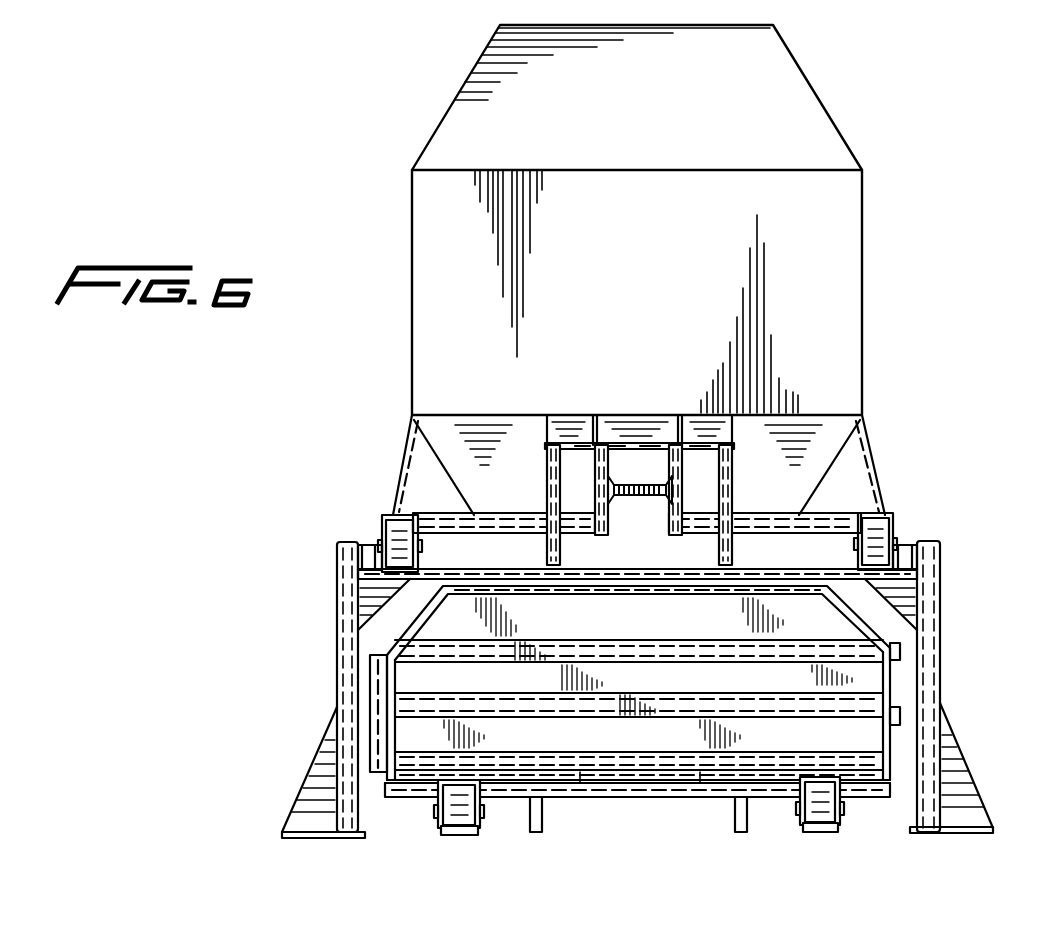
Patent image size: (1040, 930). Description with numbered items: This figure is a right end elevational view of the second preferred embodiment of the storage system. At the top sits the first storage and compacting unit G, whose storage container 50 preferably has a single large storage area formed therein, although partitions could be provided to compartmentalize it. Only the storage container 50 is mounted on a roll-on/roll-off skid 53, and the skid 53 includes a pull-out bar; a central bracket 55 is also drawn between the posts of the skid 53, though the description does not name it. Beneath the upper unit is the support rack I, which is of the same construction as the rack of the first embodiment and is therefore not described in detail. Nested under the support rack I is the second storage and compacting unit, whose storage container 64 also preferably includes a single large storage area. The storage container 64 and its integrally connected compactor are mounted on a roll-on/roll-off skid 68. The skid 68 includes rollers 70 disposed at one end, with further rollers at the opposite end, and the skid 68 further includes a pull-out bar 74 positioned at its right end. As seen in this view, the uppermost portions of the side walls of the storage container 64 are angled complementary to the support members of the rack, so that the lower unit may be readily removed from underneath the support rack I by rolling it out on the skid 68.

The storage container 50 is at (843, 268).
The first storage and compacting unit G is at (893, 357).
The roll-on/roll-off skid 53 is at (693, 543).
The bracket 55 is at (640, 500).
The storage container 64 is at (830, 618).
The support rack I is at (930, 680).
The pull-out bar 74 is at (655, 772).
The roll-on/roll-off skid 68 is at (608, 813).
The rollers 70 is at (468, 838).